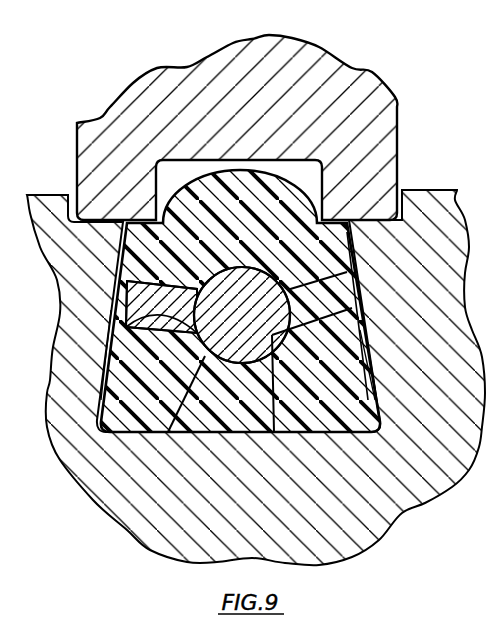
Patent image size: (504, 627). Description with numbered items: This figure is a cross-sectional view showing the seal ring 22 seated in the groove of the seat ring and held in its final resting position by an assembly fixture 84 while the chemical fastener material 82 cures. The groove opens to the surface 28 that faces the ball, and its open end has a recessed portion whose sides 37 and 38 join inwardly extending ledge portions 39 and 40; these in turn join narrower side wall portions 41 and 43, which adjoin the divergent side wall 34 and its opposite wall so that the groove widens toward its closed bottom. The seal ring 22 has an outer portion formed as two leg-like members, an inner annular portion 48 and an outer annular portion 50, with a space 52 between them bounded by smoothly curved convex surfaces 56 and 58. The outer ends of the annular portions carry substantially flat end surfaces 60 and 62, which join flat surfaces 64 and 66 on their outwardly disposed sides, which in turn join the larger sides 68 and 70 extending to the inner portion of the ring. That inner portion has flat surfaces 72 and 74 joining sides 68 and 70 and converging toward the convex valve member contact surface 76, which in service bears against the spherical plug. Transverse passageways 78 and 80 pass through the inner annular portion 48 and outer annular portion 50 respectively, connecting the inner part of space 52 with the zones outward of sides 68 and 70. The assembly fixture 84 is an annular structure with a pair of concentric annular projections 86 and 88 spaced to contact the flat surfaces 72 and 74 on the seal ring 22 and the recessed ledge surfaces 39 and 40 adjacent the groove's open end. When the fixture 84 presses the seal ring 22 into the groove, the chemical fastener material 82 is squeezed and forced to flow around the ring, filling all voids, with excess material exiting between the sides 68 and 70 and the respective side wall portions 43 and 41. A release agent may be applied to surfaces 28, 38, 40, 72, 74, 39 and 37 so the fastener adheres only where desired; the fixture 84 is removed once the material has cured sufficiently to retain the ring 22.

The seal ring 22 is at (249, 248).
The surface 28 is at (419, 190).
The side wall 34 is at (355, 325).
The side 37 is at (419, 203).
The side 38 is at (70, 205).
The ledge portion 39 is at (385, 242).
The ledge portion 40 is at (70, 220).
The side wall portion 41 is at (380, 255).
The side wall portion 43 is at (122, 230).
The inner annular portion 48 is at (117, 365).
The outer annular portion 50 is at (379, 380).
The space 52 is at (236, 438).
The convex surface 56 is at (197, 413).
The convex surface 58 is at (295, 433).
The end surface 60 is at (100, 435).
The end surface 62 is at (380, 438).
The flat surface 64 is at (92, 408).
The flat surface 66 is at (382, 400).
The side 68 is at (118, 297).
The side 70 is at (372, 361).
The flat surface 72 is at (162, 205).
The flat surface 74 is at (316, 205).
The valve member contact surface 76 is at (270, 207).
The passageway 78 is at (115, 323).
The passageway 80 is at (345, 290).
The chemical fastener material 82 is at (230, 395).
The assembly fixture 84 is at (275, 57).
The annular projection 86 is at (123, 187).
The annular projection 88 is at (399, 143).